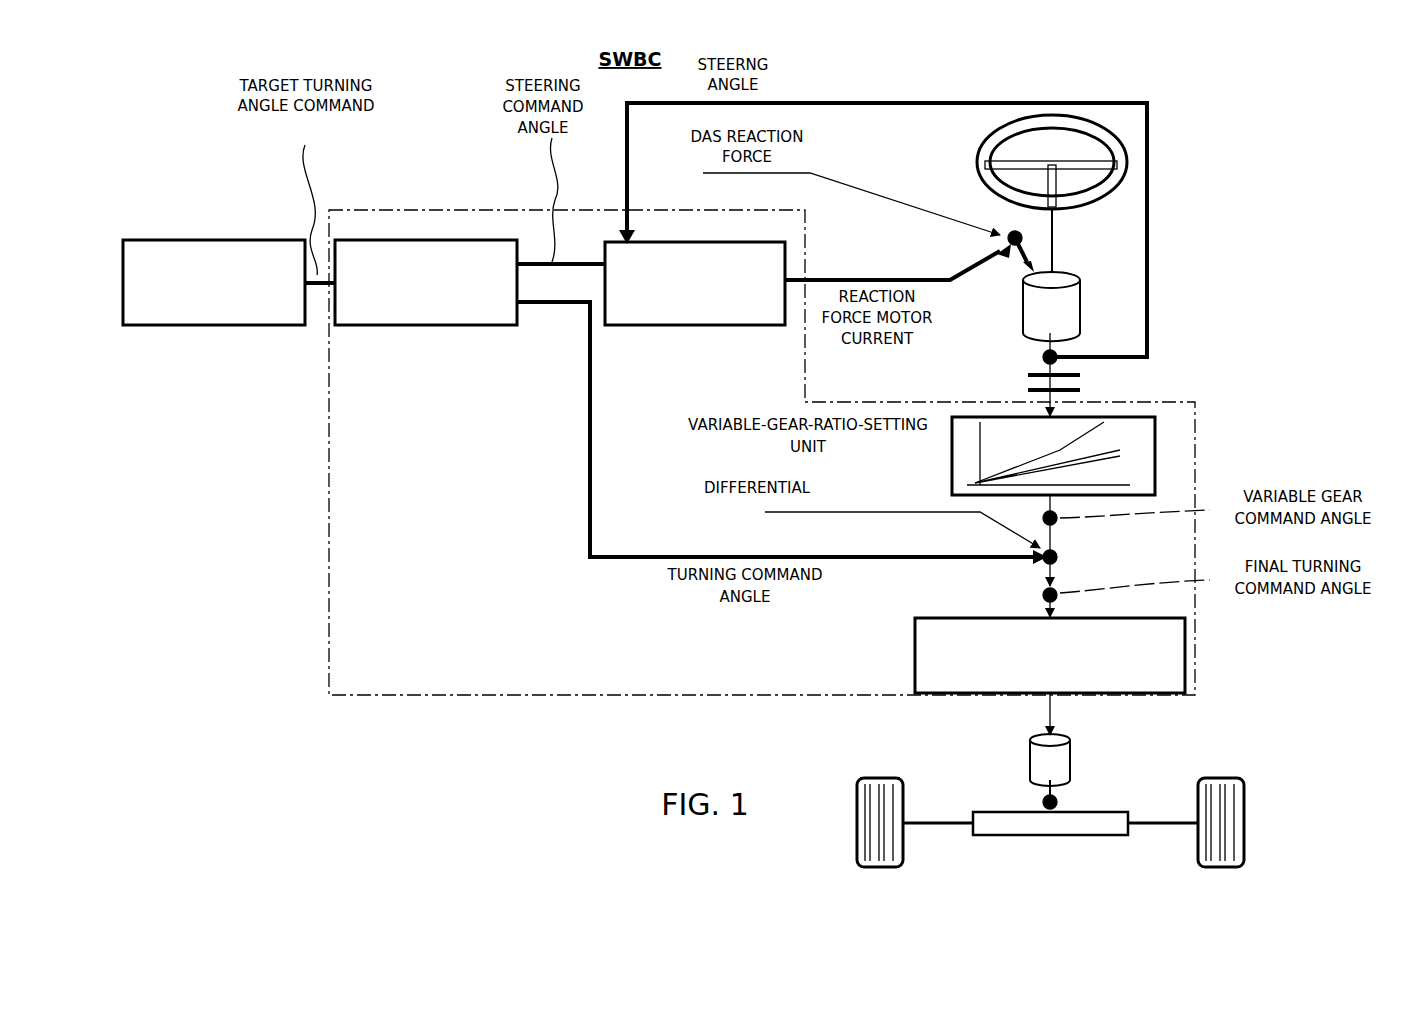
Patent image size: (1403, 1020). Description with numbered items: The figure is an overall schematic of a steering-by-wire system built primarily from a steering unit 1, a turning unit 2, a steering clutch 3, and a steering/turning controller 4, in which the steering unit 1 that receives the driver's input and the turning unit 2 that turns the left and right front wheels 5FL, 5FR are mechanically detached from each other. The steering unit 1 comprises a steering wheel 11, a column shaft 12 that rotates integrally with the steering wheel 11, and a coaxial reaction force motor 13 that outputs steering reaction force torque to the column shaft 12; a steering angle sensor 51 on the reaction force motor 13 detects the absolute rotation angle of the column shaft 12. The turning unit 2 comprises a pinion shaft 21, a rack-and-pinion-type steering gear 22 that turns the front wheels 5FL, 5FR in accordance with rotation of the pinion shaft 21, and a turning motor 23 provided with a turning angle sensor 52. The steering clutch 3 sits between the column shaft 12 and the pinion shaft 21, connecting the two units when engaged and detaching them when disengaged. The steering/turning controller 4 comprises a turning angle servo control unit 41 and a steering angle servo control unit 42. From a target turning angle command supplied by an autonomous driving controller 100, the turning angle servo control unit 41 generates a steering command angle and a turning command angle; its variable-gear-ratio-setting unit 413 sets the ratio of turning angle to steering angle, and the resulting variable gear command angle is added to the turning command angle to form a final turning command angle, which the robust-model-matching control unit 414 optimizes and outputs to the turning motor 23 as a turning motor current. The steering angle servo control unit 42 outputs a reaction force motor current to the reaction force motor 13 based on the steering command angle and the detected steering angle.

The autonomous driving controller 100 is at (157, 240).
The steering/turning controller 4 is at (447, 210).
The turning angle servo control unit 41 is at (368, 240).
The steering angle servo control unit 42 is at (660, 242).
The steering unit 1 is at (1160, 230).
The steering wheel 11 is at (978, 152).
The column shaft 12 is at (1056, 250).
The reaction force motor 13 is at (1082, 295).
The steering angle sensor 51 is at (1058, 352).
The steering clutch 3 is at (1095, 375).
The variable-gear-ratio-setting unit 413 is at (1157, 440).
The robust-model-matching control unit 414 is at (915, 645).
The turning unit 2 is at (1150, 742).
The turning motor 23 is at (1025, 755).
The pinion shaft 21 is at (1045, 793).
The turning angle sensor 52 is at (1060, 800).
The steering gear 22 is at (1012, 835).
The left front wheel 5FL is at (883, 778).
The right front wheel 5FR is at (1246, 795).